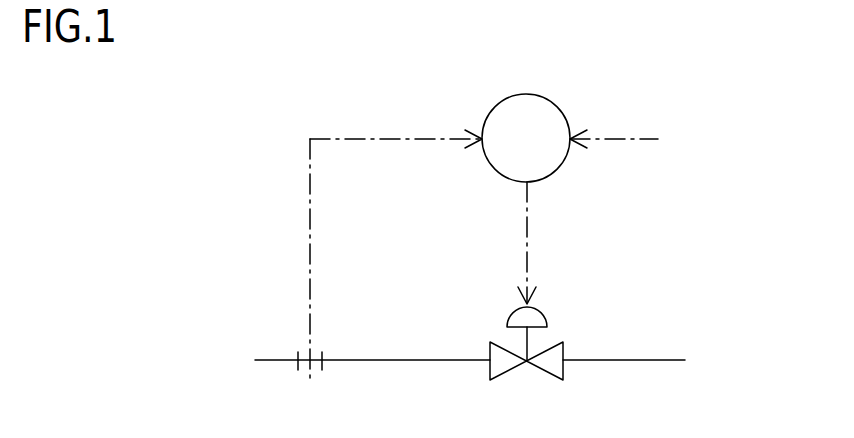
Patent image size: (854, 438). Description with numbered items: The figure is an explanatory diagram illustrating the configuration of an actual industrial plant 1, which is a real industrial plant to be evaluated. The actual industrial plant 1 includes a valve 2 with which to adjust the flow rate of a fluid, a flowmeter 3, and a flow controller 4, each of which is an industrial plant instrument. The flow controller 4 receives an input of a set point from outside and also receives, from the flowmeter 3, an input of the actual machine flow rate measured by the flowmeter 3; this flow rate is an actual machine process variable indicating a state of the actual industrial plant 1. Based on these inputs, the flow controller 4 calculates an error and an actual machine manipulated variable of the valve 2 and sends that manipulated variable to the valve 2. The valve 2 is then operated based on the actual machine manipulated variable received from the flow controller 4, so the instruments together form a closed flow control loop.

The actual industrial plant 1 is at (708, 105).
The valve 2 is at (540, 312).
The flowmeter 3 is at (311, 353).
The flow controller 4 is at (526, 94).